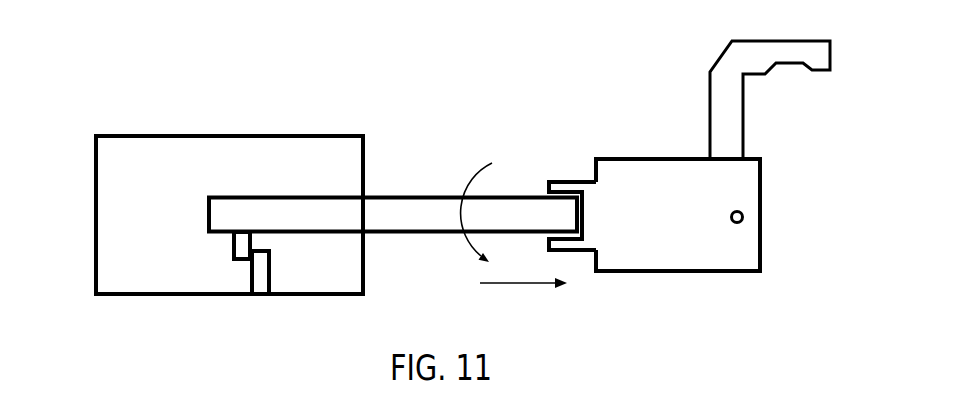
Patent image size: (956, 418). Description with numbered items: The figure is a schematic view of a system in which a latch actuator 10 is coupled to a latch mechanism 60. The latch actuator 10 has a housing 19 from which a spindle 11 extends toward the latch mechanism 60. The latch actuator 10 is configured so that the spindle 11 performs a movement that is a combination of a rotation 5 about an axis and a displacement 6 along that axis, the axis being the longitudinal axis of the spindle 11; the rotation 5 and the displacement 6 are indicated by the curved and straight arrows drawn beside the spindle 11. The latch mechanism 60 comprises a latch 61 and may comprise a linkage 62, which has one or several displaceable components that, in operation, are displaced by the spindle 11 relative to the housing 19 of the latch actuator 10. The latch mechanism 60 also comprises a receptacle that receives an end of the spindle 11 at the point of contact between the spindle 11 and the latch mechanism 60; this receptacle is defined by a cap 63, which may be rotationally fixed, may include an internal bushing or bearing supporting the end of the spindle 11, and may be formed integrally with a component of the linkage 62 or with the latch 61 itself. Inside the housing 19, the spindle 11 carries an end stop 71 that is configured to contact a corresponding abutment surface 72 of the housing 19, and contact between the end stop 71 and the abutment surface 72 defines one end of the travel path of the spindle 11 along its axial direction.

The latch actuator 10 is at (204, 178).
The housing 19 is at (260, 133).
The spindle 11 is at (417, 196).
The rotation 5 is at (467, 183).
The displacement 6 is at (520, 287).
The latch mechanism 60 is at (683, 145).
The latch 61 is at (715, 66).
The linkage 62 is at (697, 157).
The cap 63 is at (563, 182).
The end stop 71 is at (233, 247).
The abutment surface 72 is at (270, 280).